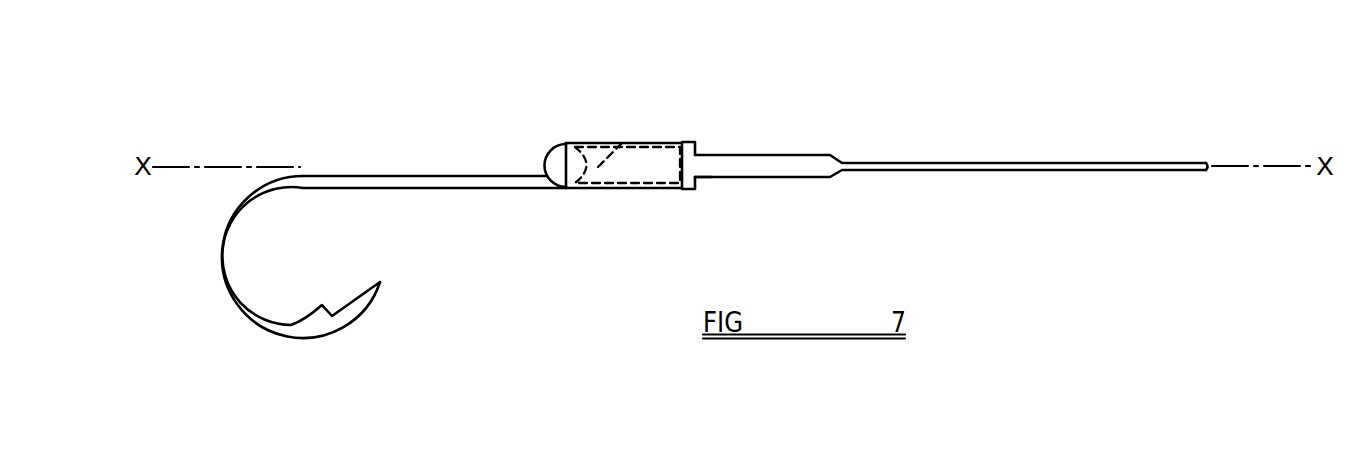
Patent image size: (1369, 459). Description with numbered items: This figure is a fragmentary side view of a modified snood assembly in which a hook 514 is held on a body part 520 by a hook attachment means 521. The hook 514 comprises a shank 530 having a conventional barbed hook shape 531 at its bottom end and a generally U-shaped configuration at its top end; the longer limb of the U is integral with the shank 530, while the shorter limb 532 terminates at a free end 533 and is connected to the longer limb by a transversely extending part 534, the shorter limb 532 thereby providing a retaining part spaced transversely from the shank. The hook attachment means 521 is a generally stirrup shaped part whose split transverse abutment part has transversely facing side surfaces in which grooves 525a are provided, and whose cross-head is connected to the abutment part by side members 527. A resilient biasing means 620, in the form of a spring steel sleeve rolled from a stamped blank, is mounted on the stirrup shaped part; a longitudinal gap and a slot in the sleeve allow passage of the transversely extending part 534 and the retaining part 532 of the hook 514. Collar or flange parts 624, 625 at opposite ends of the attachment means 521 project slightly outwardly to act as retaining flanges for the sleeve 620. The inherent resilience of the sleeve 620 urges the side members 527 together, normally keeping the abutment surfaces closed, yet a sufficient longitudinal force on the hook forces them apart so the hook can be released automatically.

The hook 514 is at (422, 176).
The shank 530 is at (450, 188).
The barbed hook shape 531 is at (348, 316).
The shorter limb 532 is at (568, 143).
The free end 533 is at (559, 148).
The collar or flange part 624 is at (551, 167).
The resilient biasing means 620 is at (661, 157).
The side members 527 is at (642, 176).
The transversely extending part 534 is at (622, 143).
The grooves 525a is at (573, 235).
The hook attachment means 521 is at (683, 189).
The body part 520 is at (775, 155).
The collar or flange part 625 is at (698, 188).